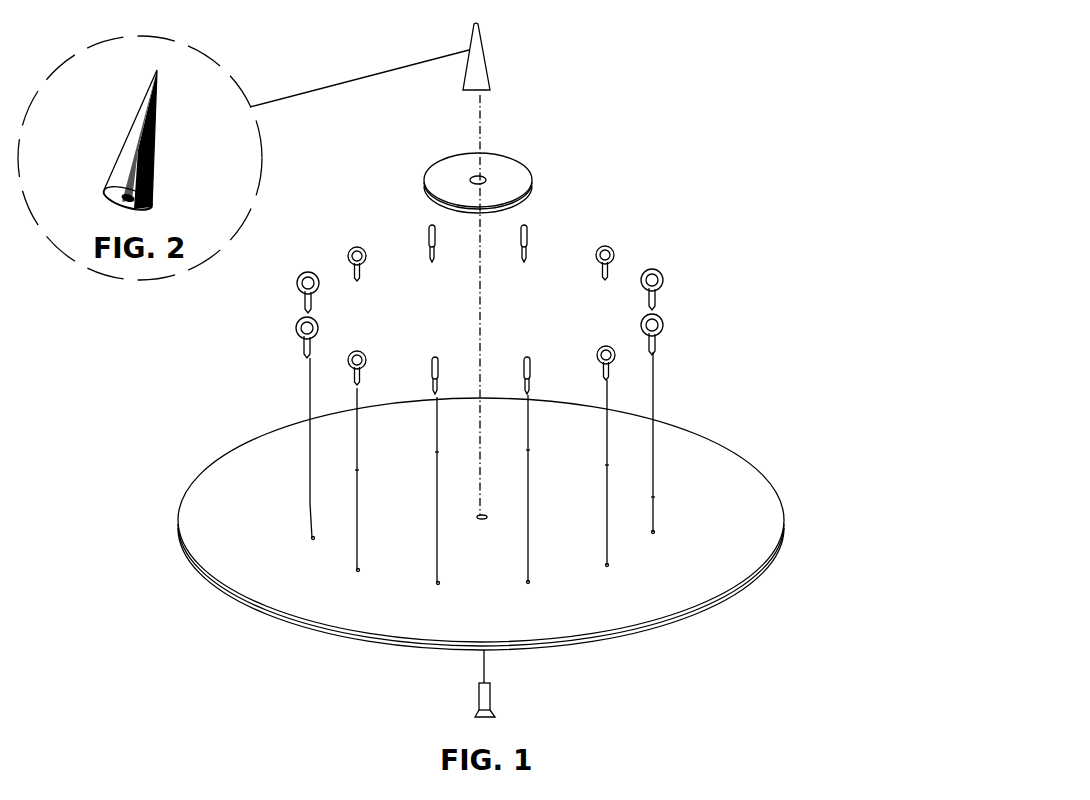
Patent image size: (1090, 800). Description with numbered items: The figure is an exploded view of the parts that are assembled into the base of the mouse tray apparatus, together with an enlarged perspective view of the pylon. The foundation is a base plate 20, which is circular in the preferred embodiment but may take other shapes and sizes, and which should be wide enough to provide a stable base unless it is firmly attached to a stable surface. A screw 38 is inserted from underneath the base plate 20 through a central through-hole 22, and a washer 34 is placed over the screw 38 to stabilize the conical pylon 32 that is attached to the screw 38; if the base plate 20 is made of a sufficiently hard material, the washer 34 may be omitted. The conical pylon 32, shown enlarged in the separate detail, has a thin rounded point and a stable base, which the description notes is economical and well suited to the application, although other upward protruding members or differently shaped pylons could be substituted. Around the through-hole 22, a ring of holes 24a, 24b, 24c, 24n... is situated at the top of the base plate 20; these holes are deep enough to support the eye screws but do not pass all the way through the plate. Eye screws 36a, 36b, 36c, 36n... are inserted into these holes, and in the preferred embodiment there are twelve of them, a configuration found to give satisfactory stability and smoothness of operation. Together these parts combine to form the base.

In FIG. 1, the base plate 20 is at (481, 524).
In FIG. 1, the through-hole 22 is at (486, 515).
In FIG. 1, the hole 24a is at (310, 503).
In FIG. 1, the hole 24b is at (313, 538).
In FIG. 1, the hole 24c is at (357, 570).
In FIG. 1, the holes 24n... is at (437, 583).
In FIG. 2, the conical pylon 32 is at (125, 132).
In FIG. 1, the conical pylon 32 is at (478, 68).
In FIG. 1, the washer 34 is at (503, 177).
In FIG. 1, the eye screw 36a is at (528, 225).
In FIG. 1, the eye screw 36b is at (614, 250).
In FIG. 1, the eye screw 36c is at (663, 274).
In FIG. 1, the eye screws 36n... is at (663, 323).
In FIG. 1, the screw 38 is at (490, 697).